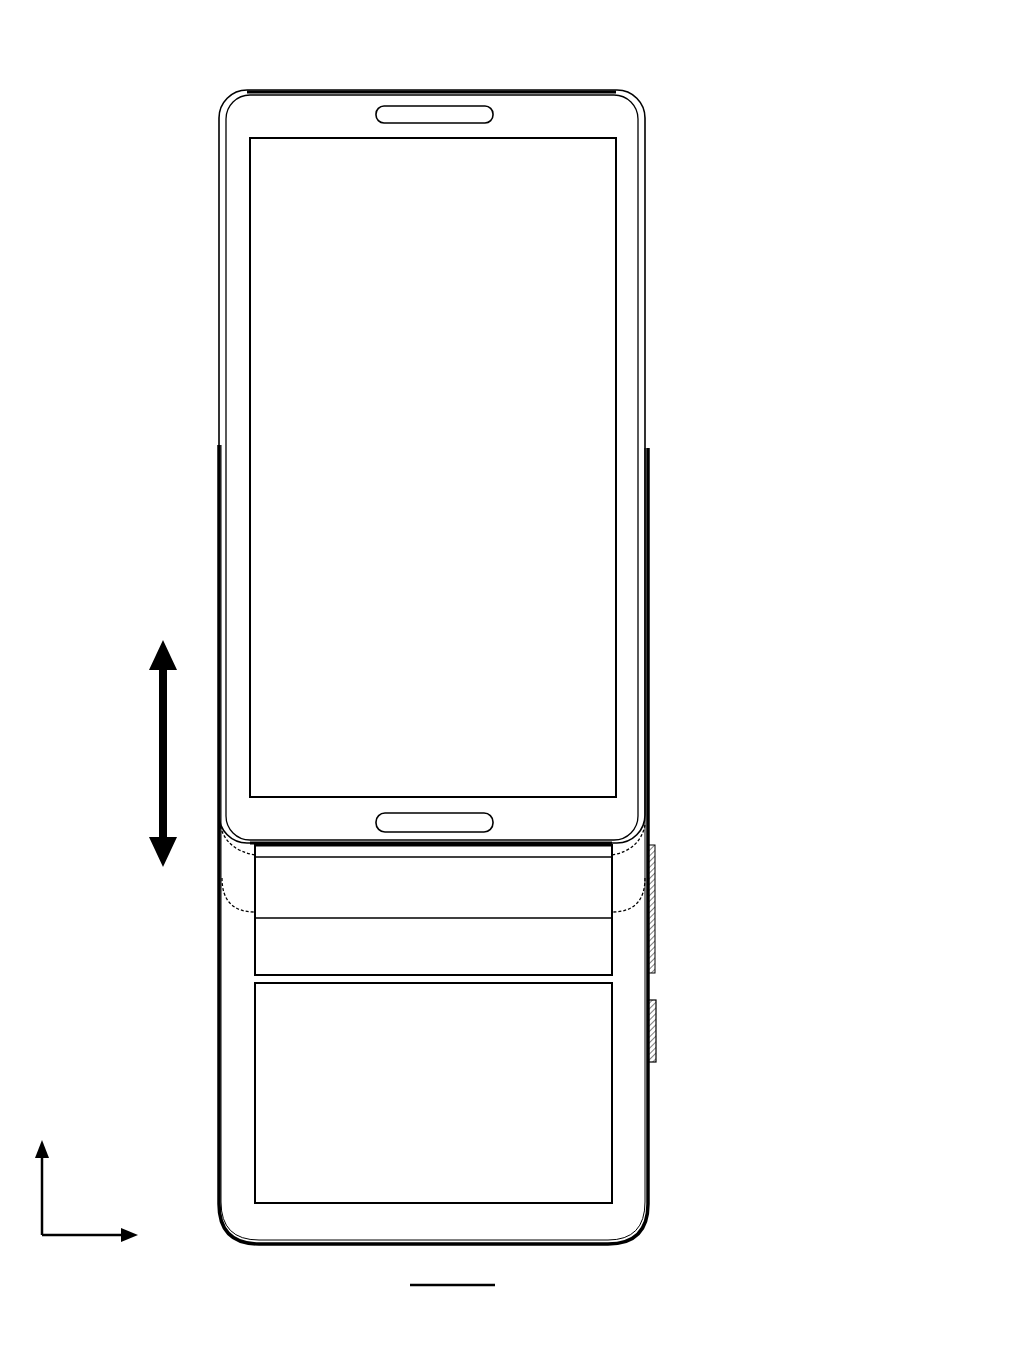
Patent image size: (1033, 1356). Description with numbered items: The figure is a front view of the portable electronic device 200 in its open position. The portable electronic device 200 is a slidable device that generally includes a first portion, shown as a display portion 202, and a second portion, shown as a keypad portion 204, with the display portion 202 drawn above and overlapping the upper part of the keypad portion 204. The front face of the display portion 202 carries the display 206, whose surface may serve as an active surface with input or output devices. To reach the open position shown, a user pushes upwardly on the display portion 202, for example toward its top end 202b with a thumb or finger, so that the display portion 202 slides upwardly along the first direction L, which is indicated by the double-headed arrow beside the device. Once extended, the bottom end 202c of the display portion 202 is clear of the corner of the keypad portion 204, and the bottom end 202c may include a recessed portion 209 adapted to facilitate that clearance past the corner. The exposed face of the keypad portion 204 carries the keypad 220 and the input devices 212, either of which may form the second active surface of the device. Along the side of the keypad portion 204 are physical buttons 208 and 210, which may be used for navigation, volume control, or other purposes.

The portable electronic device 200 is at (241, 47).
The display portion 202 is at (475, 438).
The top end of the display portion 202b is at (614, 90).
The bottom end of the display portion 202c is at (628, 836).
The keypad portion 204 is at (233, 1105).
The display 206 is at (283, 206).
The physical button 208 is at (653, 880).
The recessed portion 209 is at (315, 847).
The physical button 210 is at (655, 1020).
The input devices 212 is at (572, 940).
The keypad 220 is at (572, 1108).
The first direction L is at (160, 730).